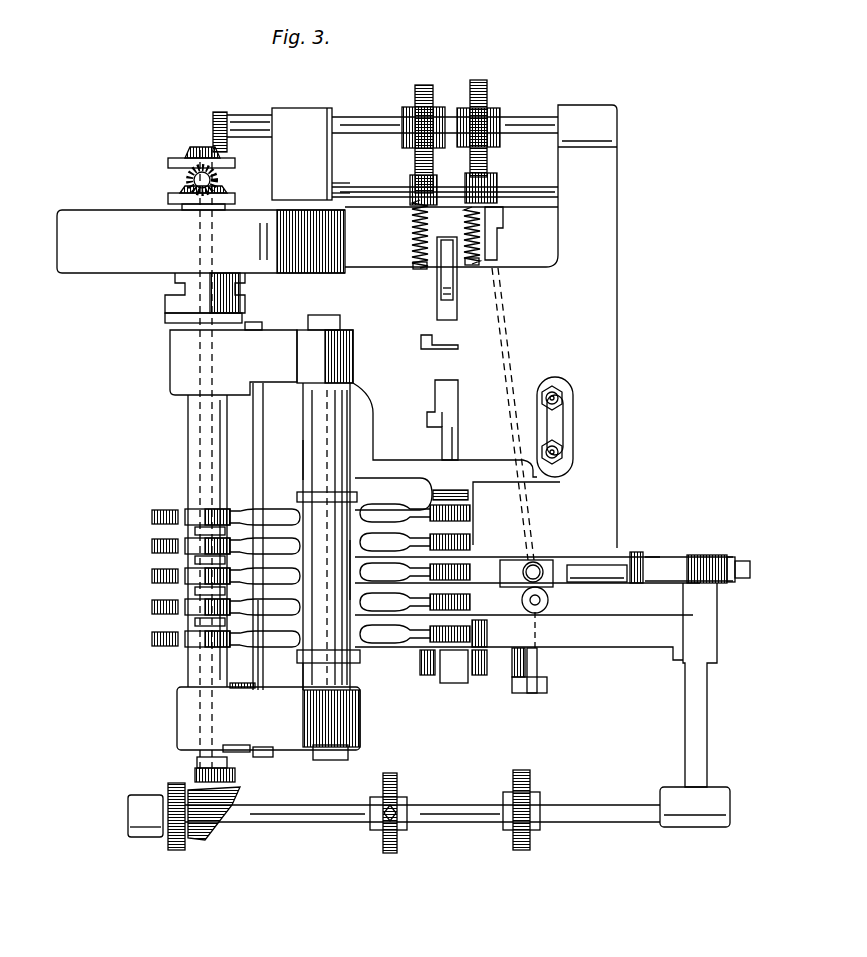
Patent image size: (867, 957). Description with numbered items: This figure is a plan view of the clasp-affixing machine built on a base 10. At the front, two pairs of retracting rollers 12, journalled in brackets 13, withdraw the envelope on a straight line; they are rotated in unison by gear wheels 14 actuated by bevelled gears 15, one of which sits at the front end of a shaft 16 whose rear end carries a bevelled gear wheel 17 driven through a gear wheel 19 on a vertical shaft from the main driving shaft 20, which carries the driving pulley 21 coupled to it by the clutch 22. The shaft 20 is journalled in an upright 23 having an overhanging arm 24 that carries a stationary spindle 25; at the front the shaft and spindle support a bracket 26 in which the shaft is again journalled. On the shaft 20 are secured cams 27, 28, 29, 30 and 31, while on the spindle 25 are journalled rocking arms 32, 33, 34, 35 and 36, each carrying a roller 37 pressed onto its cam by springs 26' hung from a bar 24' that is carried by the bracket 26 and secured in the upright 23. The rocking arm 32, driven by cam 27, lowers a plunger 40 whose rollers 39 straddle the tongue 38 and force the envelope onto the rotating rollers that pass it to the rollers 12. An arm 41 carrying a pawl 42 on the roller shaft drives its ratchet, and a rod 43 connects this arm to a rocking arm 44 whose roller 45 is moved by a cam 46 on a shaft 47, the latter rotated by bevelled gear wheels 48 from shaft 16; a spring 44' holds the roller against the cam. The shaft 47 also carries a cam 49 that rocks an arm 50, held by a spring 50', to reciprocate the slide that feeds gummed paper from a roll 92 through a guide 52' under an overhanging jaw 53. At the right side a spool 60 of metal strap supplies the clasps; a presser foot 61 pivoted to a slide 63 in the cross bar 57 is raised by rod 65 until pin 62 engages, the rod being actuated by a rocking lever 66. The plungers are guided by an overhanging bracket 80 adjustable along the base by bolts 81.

The base 10 is at (617, 443).
The retracting rollers 12 is at (370, 840).
The brackets 13 is at (707, 722).
The gear wheels 14 is at (170, 840).
The bevelled gears 15 is at (216, 800).
The shaft 16 is at (196, 770).
The bevelled gear wheel 17 is at (168, 163).
The gear wheel 19 is at (220, 191).
The main driving shaft 20 is at (188, 445).
The driving pulley 21 is at (112, 212).
The clutch 22 is at (175, 296).
The upright 23 is at (170, 372).
The overhanging arm 24 is at (311, 343).
The bar 24' is at (282, 460).
The spindle 25 is at (303, 432).
The bracket 26 is at (248, 583).
The springs 26' is at (328, 577).
The cam 27 is at (152, 639).
The cam 28 is at (152, 607).
The cam 29 is at (152, 576).
The cam 30 is at (152, 546).
The cam 31 is at (152, 517).
The rocking arm 32 is at (263, 645).
The rocking arm 33 is at (355, 648).
The rocking arm 34 is at (329, 570).
The rocking arm 35 is at (277, 547).
The rocking arm 36 is at (393, 494).
The roller 37 is at (190, 510).
The tongue 38 is at (450, 685).
The rollers 39 is at (487, 643).
The plunger 40 is at (512, 670).
The arm 41 is at (525, 693).
The pawl 42 is at (541, 675).
The rod 43 is at (497, 248).
The rocking arm 44 is at (458, 234).
The spring 44' is at (510, 276).
The roller 45 is at (497, 182).
The cam 46 is at (487, 100).
The shaft 47 is at (533, 111).
The bevelled gear wheels 48 is at (206, 147).
The cam 49 is at (415, 100).
The arm 50 is at (392, 234).
The spring 50' is at (411, 284).
The guide 52' is at (430, 353).
The overhanging jaw 53 is at (452, 440).
The cross bar 57 is at (610, 652).
The spool 60 is at (701, 553).
The presser foot 61 is at (570, 565).
The pin 62 is at (636, 552).
The slide 63 is at (568, 599).
The rod 65 is at (730, 556).
The rocking lever 66 is at (736, 585).
The overhanging bracket 80 is at (468, 497).
The bolts 81 is at (565, 398).
The roll 92 is at (455, 290).